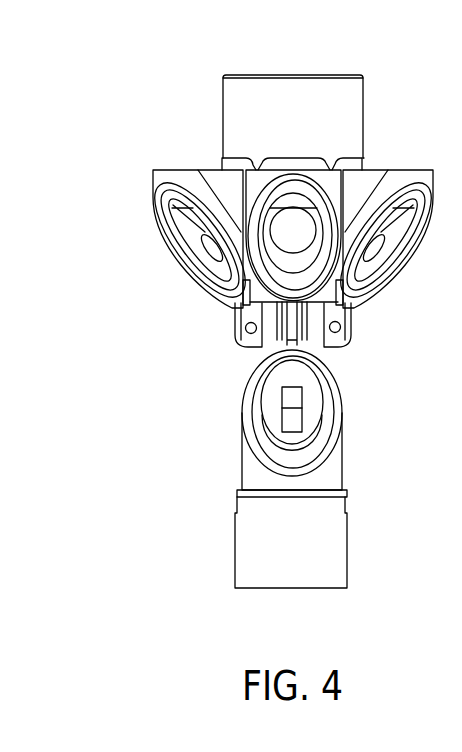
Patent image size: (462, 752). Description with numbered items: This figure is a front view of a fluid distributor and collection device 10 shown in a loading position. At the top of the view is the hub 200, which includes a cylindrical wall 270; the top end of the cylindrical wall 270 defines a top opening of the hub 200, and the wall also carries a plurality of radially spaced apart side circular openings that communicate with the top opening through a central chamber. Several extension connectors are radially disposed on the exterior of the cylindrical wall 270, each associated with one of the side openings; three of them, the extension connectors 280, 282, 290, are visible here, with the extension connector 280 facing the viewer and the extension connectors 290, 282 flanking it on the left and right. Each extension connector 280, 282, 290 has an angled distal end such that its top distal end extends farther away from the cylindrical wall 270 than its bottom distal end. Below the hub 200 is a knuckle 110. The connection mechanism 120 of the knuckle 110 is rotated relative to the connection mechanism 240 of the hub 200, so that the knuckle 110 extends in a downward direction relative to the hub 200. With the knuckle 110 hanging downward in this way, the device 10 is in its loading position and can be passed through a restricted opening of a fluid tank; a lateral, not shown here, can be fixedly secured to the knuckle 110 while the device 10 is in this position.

The fluid distributor and collection device 10 is at (400, 571).
The knuckle 110 is at (364, 469).
The connection mechanism of the knuckle 120 is at (282, 312).
The hub 200 is at (380, 123).
The connection mechanism of the hub 240 is at (288, 338).
The cylindrical wall 270 is at (223, 92).
The extension connector 280 is at (281, 168).
The extension connector 282 is at (407, 168).
The extension connector 290 is at (180, 168).